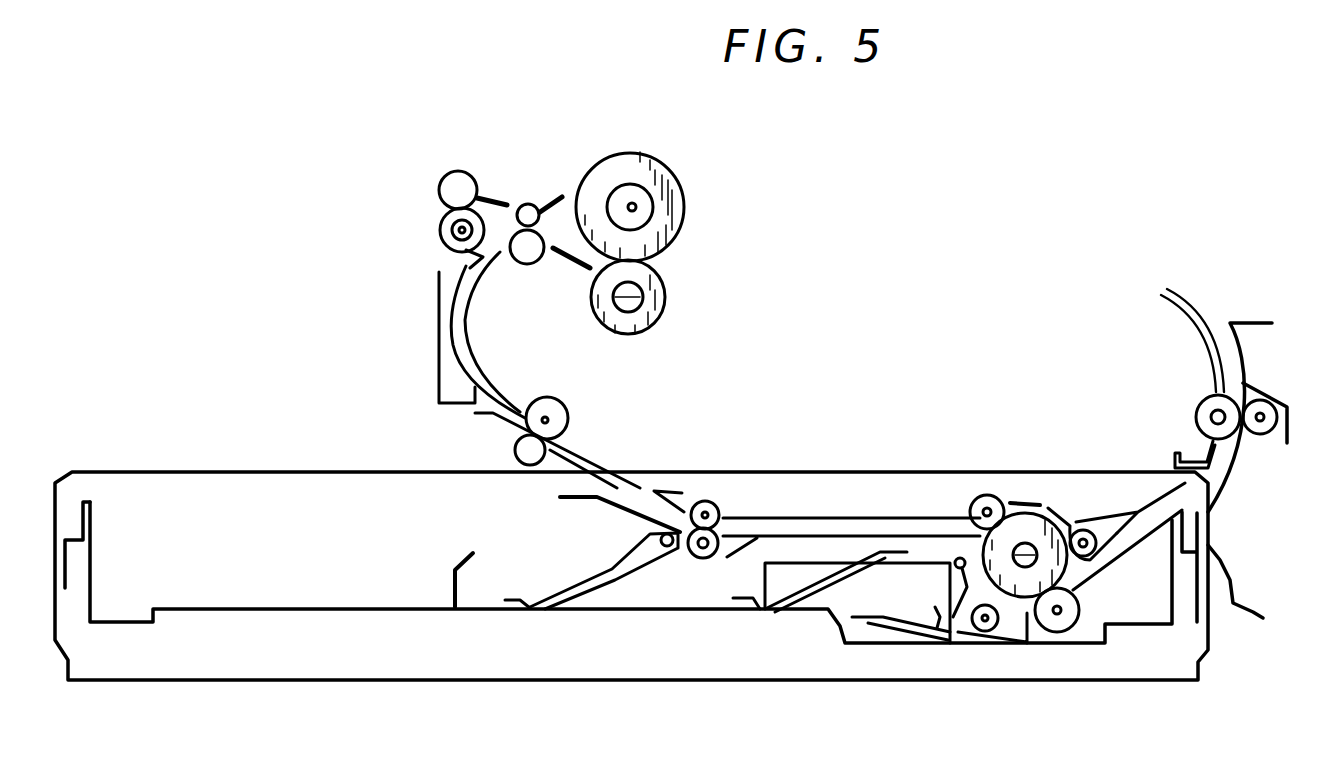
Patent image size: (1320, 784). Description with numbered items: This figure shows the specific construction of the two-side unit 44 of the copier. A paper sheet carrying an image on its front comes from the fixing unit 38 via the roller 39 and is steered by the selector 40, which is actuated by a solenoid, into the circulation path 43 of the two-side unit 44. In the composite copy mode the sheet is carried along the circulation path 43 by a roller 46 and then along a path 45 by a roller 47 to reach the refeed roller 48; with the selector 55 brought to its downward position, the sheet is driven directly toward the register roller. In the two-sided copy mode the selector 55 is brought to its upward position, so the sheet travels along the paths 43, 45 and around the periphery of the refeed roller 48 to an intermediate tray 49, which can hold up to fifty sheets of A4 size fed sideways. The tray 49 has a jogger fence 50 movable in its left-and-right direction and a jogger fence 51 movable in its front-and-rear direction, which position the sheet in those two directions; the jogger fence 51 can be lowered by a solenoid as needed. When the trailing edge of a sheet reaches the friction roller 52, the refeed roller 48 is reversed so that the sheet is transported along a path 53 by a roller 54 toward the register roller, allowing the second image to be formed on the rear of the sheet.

The fixing unit 38 is at (687, 190).
The roller 39 is at (530, 265).
The selector 40 is at (446, 230).
The circulation path 43 is at (463, 328).
The two-side unit 44 is at (403, 681).
The path 45 is at (852, 527).
The roller 46 is at (515, 450).
The roller 47 is at (723, 522).
The refeed roller 48 is at (1020, 520).
The intermediate tray 49 is at (647, 598).
The jogger fence 50 is at (763, 583).
The jogger fence 51 is at (452, 585).
The friction roller 52 is at (1057, 620).
The path 53 is at (1207, 350).
The roller 54 is at (1263, 437).
The selector 55 is at (1083, 528).